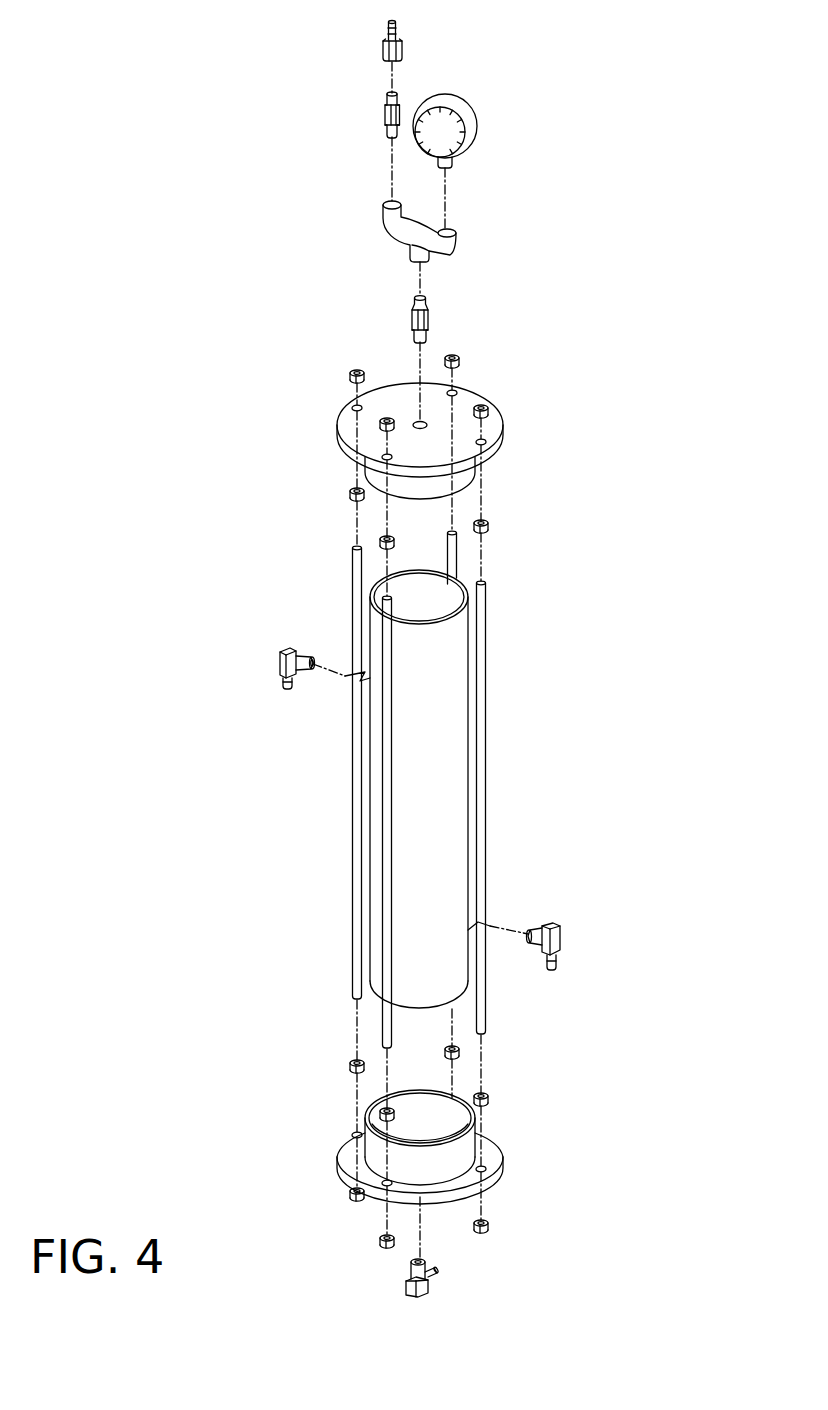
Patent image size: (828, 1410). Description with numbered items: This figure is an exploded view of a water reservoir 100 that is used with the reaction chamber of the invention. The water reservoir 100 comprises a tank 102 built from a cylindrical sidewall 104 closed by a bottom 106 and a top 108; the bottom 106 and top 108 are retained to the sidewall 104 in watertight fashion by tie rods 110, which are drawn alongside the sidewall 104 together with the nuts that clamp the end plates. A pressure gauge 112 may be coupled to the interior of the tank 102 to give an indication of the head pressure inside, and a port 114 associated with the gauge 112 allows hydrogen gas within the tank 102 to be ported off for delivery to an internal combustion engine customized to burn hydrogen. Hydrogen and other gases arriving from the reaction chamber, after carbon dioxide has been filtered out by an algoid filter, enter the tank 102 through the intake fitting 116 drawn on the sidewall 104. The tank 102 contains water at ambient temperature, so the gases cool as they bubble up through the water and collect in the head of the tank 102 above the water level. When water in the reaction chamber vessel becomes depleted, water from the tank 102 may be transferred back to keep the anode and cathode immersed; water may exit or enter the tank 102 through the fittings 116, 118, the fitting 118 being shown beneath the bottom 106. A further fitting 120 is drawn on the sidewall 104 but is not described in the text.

The water reservoir 100 is at (612, 734).
The tank 102 is at (504, 801).
The cylindrical sidewall 104 is at (450, 677).
The bottom 106 is at (503, 1142).
The top 108 is at (503, 425).
The tie rods 110 is at (355, 856).
The pressure gauge 112 is at (476, 124).
The port 114 is at (358, 20).
The intake fitting 116 is at (562, 937).
The fitting 118 is at (437, 1288).
The side inlet fitting 120 is at (280, 656).